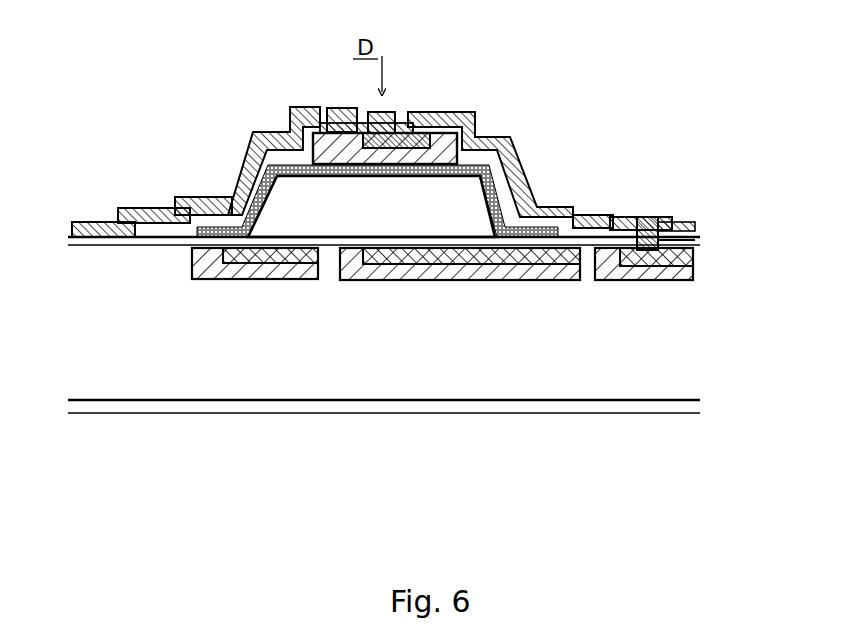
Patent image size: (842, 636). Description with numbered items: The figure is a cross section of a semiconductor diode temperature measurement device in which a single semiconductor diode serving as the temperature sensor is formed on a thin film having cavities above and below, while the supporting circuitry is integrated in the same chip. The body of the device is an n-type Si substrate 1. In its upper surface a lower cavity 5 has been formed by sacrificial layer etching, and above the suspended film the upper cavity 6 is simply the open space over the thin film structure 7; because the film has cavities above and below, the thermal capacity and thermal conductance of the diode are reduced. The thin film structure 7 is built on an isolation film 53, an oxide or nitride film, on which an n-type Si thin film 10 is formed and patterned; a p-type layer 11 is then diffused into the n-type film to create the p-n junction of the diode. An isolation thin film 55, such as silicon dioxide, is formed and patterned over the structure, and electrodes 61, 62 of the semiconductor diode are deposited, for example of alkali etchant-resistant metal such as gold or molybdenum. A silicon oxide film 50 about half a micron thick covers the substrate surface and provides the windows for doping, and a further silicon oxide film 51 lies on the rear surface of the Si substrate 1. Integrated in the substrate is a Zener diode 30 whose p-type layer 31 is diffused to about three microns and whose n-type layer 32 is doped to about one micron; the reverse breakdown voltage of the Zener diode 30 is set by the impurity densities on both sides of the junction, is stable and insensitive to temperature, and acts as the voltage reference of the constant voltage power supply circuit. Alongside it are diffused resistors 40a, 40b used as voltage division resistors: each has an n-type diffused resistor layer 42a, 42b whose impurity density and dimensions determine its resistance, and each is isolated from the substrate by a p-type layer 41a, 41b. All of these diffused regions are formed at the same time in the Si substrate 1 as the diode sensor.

The Si substrate 1 is at (384, 349).
The lower cavity 5 is at (381, 199).
The upper cavity 6 is at (453, 98).
The thin film structure 7 is at (290, 128).
The n-type Si thin film 10 is at (323, 107).
The p-type layer 11 is at (394, 130).
The Zener diode 30 is at (268, 305).
The p-type layer 31 is at (250, 279).
The n-type layer 32 is at (277, 279).
The diffused resistor 40a is at (650, 299).
The diffused resistor 40b is at (460, 305).
The p-type layer 41a is at (600, 282).
The p-type layer 41b is at (417, 281).
The n-type diffused resistor layer 42a is at (650, 282).
The n-type diffused resistor layer 42b is at (463, 254).
The silicon oxide film 50 is at (688, 232).
The silicon oxide film 51 is at (212, 401).
The isolation film 53 is at (507, 158).
The isolation thin film 55 is at (230, 195).
The electrode 61 is at (562, 205).
The electrode 62 is at (250, 150).